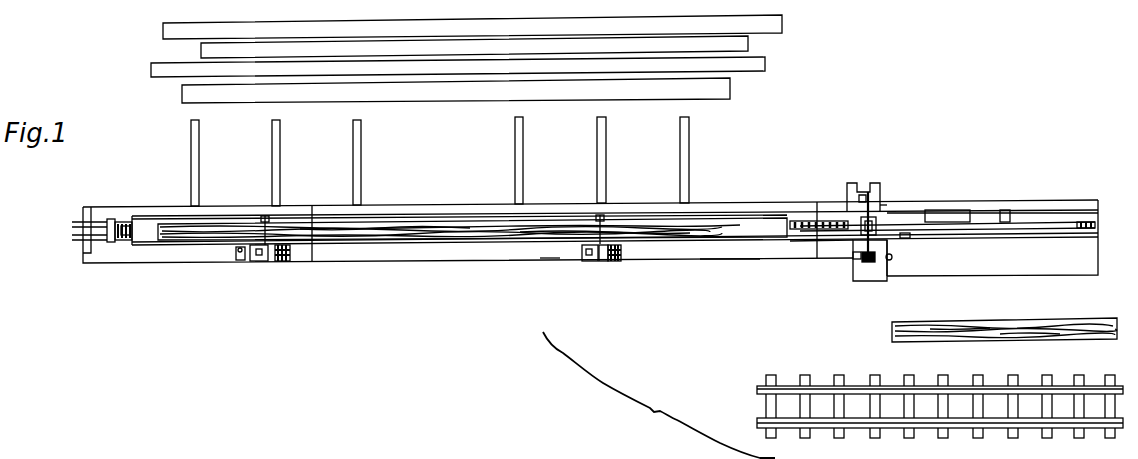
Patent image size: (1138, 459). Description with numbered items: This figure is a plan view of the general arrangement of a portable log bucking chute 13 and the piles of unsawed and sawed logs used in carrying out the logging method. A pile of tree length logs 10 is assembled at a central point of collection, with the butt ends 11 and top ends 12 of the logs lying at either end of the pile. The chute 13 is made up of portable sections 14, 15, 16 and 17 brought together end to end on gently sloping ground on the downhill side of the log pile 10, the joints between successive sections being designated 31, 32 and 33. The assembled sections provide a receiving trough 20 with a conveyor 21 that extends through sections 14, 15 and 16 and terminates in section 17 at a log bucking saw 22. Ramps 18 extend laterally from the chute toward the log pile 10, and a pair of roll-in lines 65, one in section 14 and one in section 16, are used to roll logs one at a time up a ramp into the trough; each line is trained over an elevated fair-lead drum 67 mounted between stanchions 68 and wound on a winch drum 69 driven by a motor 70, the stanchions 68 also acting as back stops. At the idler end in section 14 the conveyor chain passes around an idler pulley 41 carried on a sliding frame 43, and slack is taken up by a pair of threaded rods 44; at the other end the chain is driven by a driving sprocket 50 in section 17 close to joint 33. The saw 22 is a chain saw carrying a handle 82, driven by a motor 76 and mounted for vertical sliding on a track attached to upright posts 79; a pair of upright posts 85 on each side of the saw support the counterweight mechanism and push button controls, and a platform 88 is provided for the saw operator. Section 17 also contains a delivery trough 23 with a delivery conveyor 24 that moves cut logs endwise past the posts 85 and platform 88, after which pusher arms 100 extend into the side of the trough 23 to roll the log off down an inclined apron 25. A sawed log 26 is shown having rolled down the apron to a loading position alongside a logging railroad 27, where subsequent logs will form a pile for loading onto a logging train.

The pile of tree length logs 10 is at (145, 73).
The butt ends 11 is at (748, 43).
The top ends 12 is at (203, 51).
The log bucking chute 13 is at (737, 200).
The portable section 14 is at (187, 259).
The portable section 15 is at (425, 264).
The portable section 16 is at (731, 260).
The portable section 17 is at (831, 258).
The ramps 18 is at (353, 150).
The receiving trough 20 is at (150, 216).
The conveyor 21 is at (148, 243).
The log bucking saw 22 is at (881, 206).
The delivery trough 23 is at (1066, 212).
The delivery conveyor 24 is at (1025, 222).
The inclined apron 25 is at (1056, 278).
The sawed log 26 is at (893, 338).
The logging railroad 27 is at (757, 392).
The joint 31 is at (313, 262).
The joint 32 is at (549, 261).
The joint 33 is at (812, 252).
The idler pulley 41 is at (128, 223).
The sliding frame 43 is at (118, 243).
The threaded rods 44 is at (73, 224).
The driving sprocket 50 is at (836, 222).
The roll-in lines 65 is at (265, 240).
The fair-lead drum 67 is at (605, 262).
The stanchions 68 is at (258, 262).
The winch drum 69 is at (283, 262).
The motor 70 is at (240, 262).
The driving motor 76 is at (862, 195).
The upright posts 79 is at (873, 195).
The handle 82 is at (888, 263).
The upright posts 85 is at (855, 266).
The platform 88 is at (868, 282).
The pusher arms 100 is at (1003, 212).